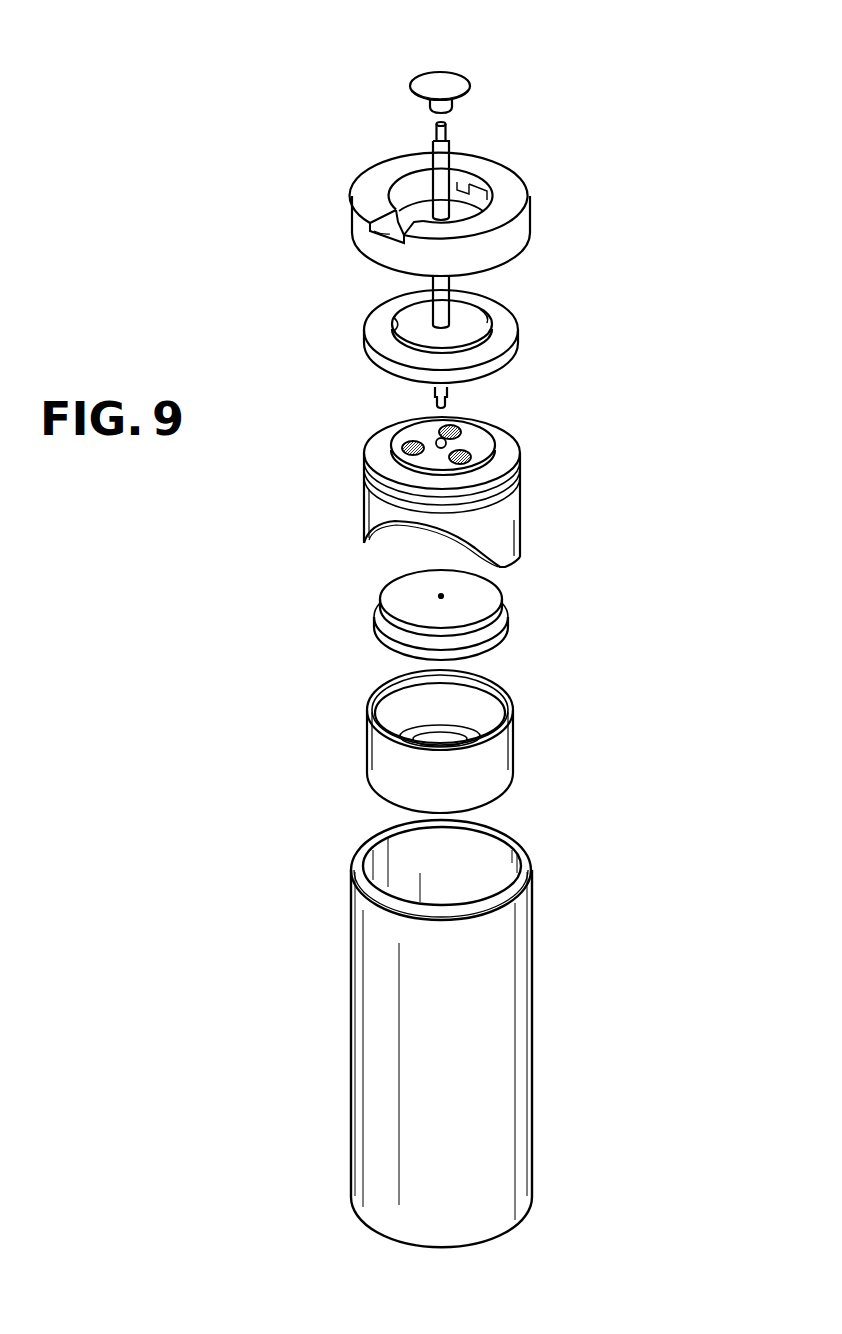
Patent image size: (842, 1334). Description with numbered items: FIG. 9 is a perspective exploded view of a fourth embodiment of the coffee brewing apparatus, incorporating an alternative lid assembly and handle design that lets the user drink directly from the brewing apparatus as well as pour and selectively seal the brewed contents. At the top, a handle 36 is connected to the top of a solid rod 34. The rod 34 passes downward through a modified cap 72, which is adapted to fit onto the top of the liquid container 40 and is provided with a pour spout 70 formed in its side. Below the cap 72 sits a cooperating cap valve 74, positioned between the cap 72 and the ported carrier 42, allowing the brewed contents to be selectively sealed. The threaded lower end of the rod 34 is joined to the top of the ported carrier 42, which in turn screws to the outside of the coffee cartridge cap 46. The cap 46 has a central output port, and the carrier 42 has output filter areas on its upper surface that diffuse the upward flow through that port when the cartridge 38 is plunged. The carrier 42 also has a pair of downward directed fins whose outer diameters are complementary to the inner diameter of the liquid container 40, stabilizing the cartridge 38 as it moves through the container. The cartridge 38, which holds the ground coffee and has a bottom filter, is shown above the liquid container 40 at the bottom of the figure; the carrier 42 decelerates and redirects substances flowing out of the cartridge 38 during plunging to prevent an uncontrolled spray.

The solid rod 34 is at (451, 145).
The handle 36 is at (460, 73).
The cartridge 38 is at (517, 712).
The liquid container 40 is at (533, 920).
The ported carrier 42 is at (516, 448).
The coffee cartridge cap 46 is at (510, 613).
The pour spout 70 is at (368, 233).
The modified cap 72 is at (533, 208).
The cap valve 74 is at (522, 332).